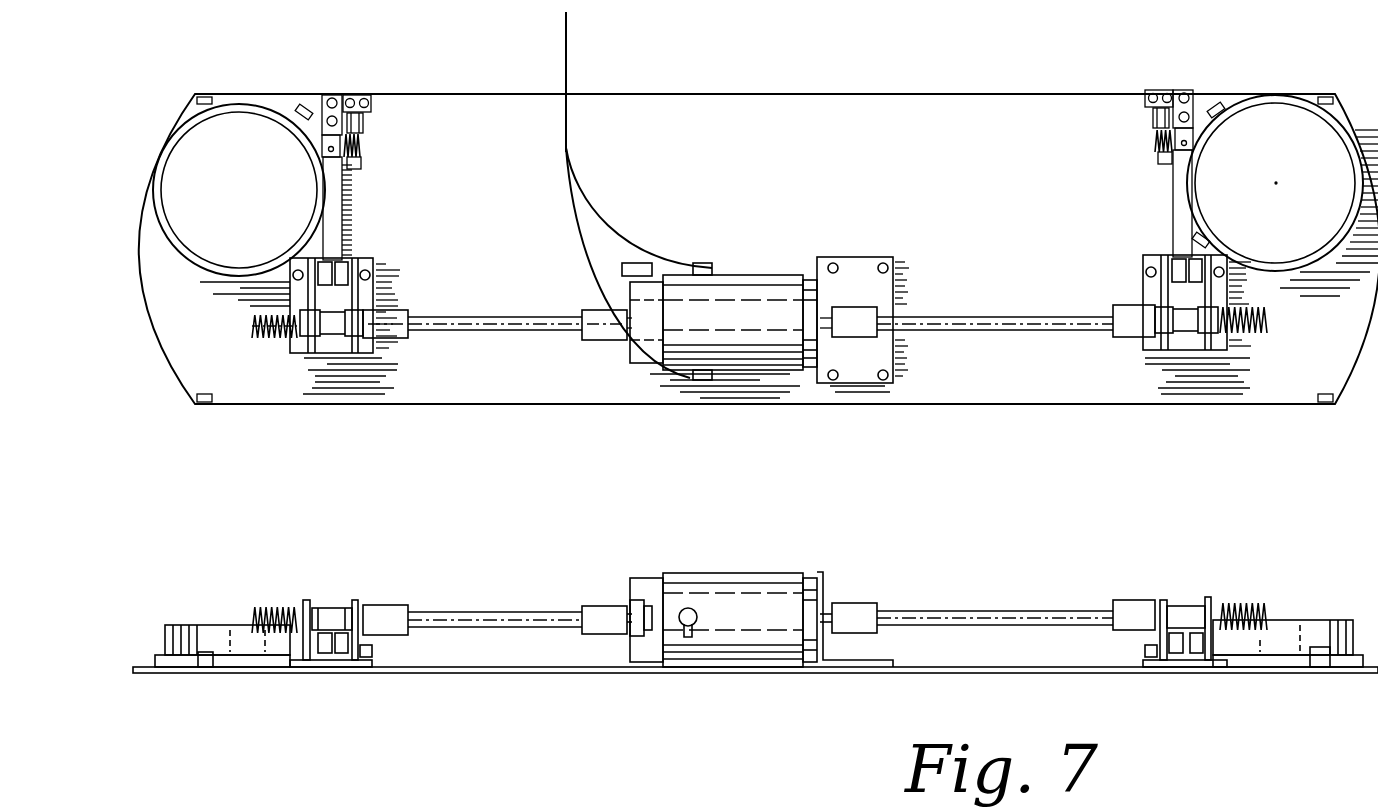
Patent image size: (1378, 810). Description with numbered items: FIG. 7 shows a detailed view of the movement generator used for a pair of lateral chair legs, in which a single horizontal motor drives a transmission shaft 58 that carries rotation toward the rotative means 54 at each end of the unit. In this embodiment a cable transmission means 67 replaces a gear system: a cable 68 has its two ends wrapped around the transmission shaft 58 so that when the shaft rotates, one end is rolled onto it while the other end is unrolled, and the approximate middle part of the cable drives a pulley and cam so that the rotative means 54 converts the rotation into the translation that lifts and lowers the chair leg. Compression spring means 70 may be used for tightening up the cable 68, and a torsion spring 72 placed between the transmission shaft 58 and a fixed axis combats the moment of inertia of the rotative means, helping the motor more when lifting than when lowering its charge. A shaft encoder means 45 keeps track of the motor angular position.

The shaft encoder means 45 is at (312, 105).
The compression spring means 70 is at (365, 133).
The cable 68 is at (345, 215).
The rotative means 54 is at (180, 282).
The cable transmission means 67 is at (530, 318).
The torsion spring 72 is at (252, 335).
The transmission shaft 58 is at (478, 332).